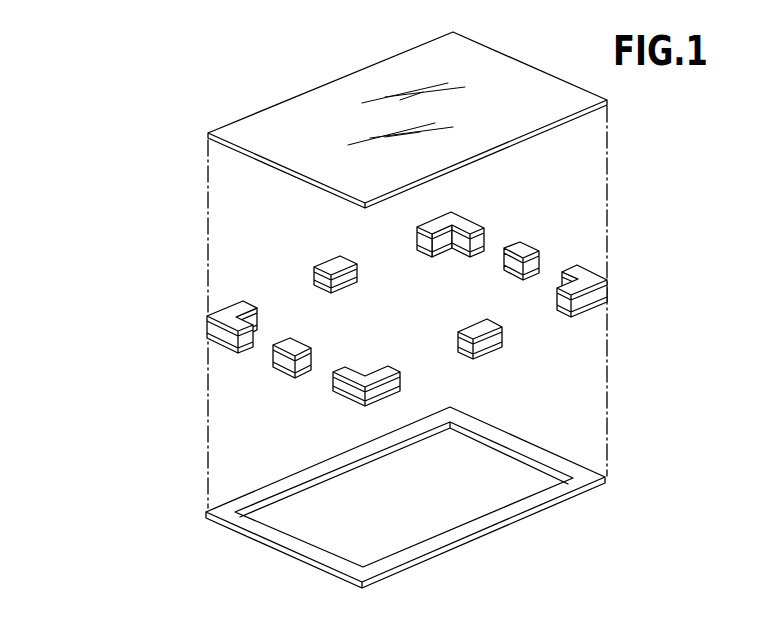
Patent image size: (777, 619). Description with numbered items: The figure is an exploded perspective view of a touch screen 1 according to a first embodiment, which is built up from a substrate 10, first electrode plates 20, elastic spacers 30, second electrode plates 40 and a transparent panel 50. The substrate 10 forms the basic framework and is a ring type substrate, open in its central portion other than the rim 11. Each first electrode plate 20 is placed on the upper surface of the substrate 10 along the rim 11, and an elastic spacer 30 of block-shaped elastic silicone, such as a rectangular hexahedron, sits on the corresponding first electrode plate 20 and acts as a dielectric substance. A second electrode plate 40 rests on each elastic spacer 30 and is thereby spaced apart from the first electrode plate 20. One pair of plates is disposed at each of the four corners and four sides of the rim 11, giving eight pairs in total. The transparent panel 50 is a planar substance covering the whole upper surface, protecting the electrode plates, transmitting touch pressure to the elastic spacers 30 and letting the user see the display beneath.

The touch screen 1 is at (168, 236).
The substrate 10 is at (247, 485).
The rim 11 is at (483, 522).
The first electrode plate 20 is at (593, 310).
The elastic spacer 30 is at (600, 295).
The second electrode plate 40 is at (587, 277).
The transparent panel 50 is at (298, 92).